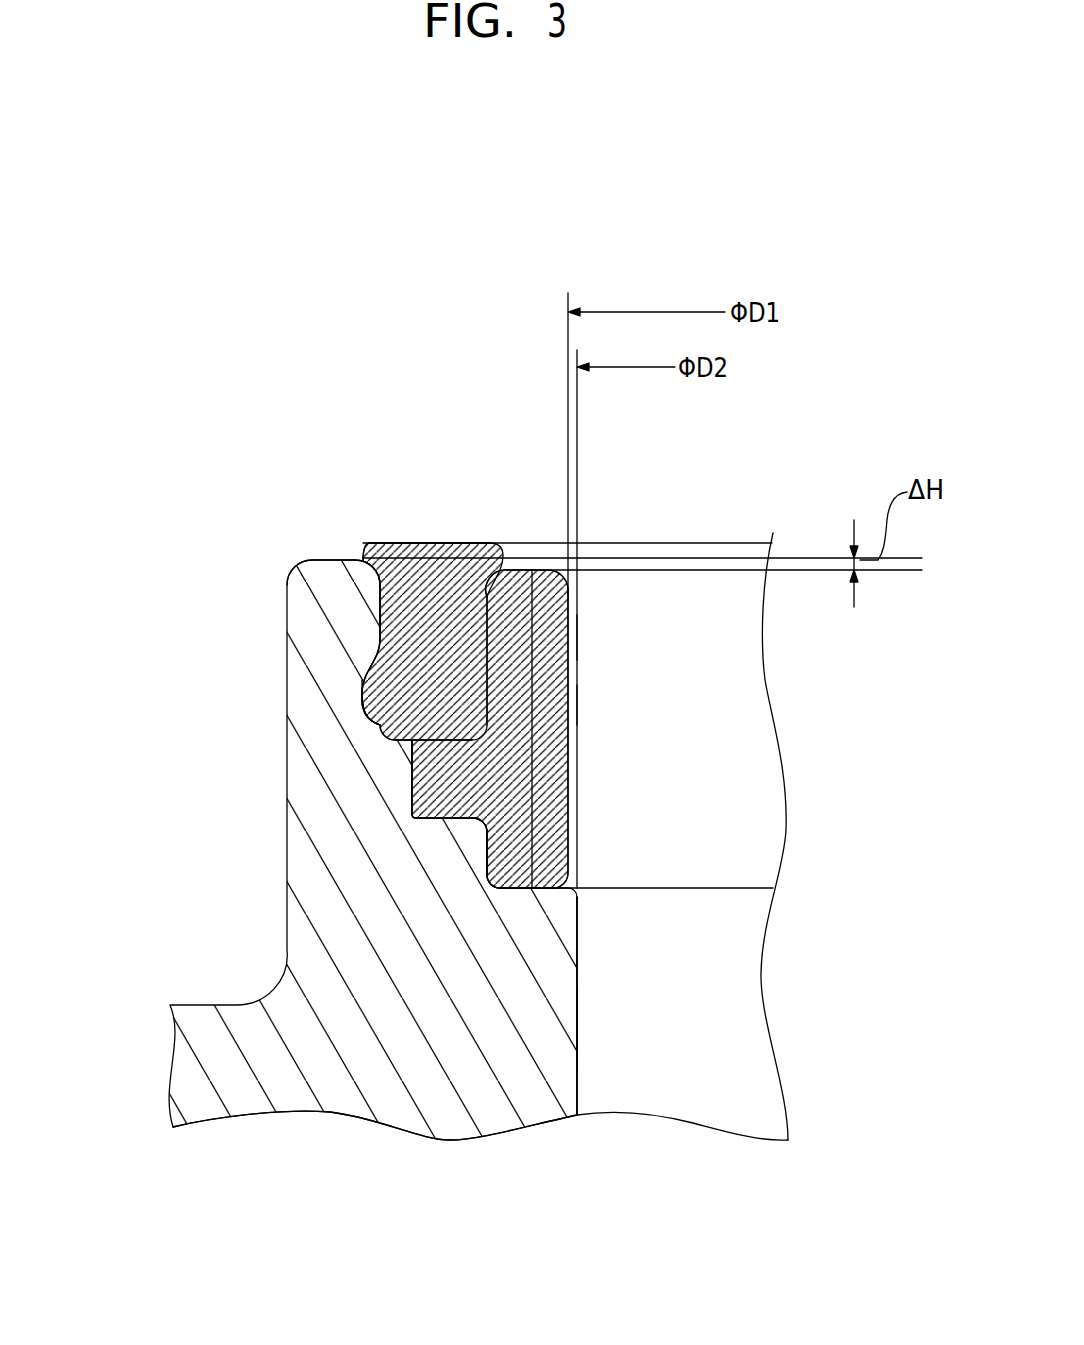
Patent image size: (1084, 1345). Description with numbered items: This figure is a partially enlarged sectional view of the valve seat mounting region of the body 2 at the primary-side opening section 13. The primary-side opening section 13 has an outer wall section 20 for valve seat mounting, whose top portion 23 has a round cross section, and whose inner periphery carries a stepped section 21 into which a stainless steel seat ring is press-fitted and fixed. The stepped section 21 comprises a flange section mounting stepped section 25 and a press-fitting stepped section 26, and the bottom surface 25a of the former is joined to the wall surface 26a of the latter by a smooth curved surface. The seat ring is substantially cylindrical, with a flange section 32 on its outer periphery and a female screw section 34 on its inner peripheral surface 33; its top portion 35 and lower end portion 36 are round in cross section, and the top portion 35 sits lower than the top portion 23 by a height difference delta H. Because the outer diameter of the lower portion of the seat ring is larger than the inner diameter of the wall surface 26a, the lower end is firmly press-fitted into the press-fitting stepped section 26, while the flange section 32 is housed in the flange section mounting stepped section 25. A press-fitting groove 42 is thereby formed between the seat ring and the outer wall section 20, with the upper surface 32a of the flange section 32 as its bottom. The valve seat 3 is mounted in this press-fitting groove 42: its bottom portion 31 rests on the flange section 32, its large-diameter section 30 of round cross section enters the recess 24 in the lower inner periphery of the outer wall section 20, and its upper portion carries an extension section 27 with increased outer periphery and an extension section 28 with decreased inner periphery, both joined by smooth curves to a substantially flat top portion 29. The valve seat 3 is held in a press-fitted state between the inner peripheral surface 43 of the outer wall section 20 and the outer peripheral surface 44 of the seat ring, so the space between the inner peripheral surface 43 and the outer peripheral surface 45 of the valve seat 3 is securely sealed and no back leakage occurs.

The body 2 is at (495, 1103).
The valve seat 3 is at (468, 603).
The primary-side opening section 13 is at (578, 1028).
The outer wall section 20 is at (310, 658).
The stepped section 21 is at (597, 767).
The top portion 23 is at (343, 557).
The recess 24 is at (377, 663).
The flange section mounting stepped section 25 is at (430, 782).
The bottom surface 25a is at (412, 803).
The press-fitting stepped section 26 is at (525, 855).
The wall surface 26a is at (497, 833).
The extension section 27 is at (363, 548).
The extension section 28 is at (508, 600).
The top portion 29 is at (418, 648).
The large-diameter section 30 is at (362, 700).
The bottom portion 31 is at (410, 742).
The flange section 32 is at (413, 795).
The upper surface 32a is at (362, 710).
The inner peripheral surface 33 is at (580, 637).
The female screw section 34 is at (575, 702).
The top portion 35 is at (533, 575).
The lower end portion 36 is at (578, 933).
The press-fitting groove 42 is at (388, 605).
The inner peripheral surface 43 is at (380, 598).
The outer peripheral surface 44 is at (453, 580).
The outer peripheral surface 45 is at (378, 612).